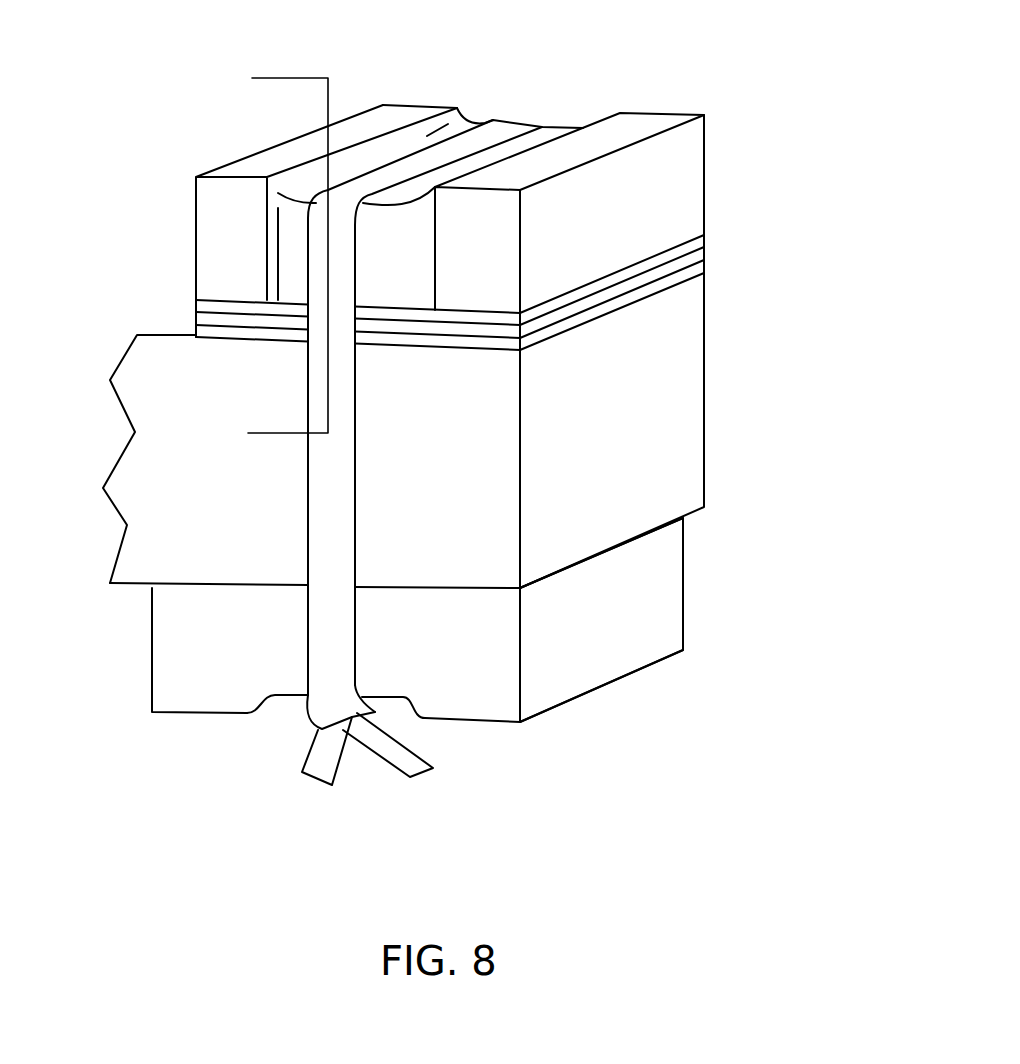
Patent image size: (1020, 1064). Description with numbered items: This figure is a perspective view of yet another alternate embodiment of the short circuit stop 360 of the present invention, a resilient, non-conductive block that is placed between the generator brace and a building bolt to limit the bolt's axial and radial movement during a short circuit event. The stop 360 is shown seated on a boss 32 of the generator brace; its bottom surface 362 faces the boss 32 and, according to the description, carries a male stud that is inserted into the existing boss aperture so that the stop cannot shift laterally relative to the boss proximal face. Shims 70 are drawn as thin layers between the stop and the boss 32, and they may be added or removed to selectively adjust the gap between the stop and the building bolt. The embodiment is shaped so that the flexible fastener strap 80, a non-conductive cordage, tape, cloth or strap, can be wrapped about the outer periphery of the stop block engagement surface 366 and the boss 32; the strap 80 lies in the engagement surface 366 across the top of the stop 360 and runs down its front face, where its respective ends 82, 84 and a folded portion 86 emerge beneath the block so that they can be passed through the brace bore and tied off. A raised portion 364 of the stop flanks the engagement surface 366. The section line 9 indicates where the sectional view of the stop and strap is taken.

The section line of FIG. 9 is at (278, 256).
The boss 32 is at (710, 528).
The shim 70 is at (683, 263).
The flexible fastener strap 80 is at (295, 529).
The strap end 82 is at (338, 780).
The strap end 84 is at (420, 773).
The lead fold 86 is at (373, 713).
The short circuit stop 360 is at (733, 160).
The bottom surface 362 is at (620, 272).
The rib 364 is at (650, 122).
The engagement surface 366 is at (458, 108).